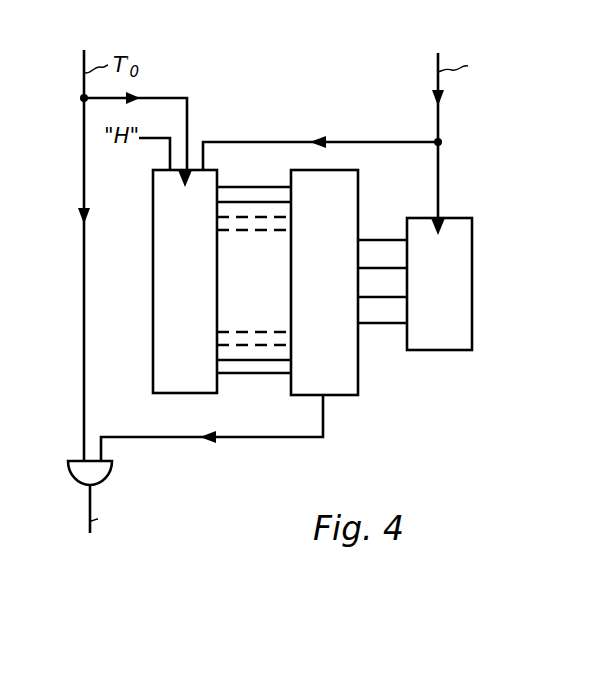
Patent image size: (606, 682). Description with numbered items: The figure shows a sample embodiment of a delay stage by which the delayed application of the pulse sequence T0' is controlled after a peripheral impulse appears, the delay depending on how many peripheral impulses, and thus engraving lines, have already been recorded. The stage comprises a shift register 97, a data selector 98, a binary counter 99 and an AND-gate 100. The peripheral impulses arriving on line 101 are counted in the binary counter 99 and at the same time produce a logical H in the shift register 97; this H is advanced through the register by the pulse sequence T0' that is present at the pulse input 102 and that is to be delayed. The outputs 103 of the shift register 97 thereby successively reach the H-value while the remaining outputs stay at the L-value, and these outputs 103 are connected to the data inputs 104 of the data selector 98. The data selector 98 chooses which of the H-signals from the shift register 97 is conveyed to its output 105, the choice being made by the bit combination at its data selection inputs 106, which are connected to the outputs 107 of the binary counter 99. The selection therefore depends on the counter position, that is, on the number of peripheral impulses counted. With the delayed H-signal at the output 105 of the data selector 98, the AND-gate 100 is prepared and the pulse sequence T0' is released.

The shift register 97 is at (164, 292).
The data selector 98 is at (358, 378).
The binary counter 99 is at (452, 338).
The AND-gate 100 is at (106, 472).
The line 101 is at (438, 76).
The pulse input 102 is at (186, 170).
The outputs 103 is at (222, 206).
The data inputs 104 is at (260, 366).
The output 105 is at (321, 397).
The data selection inputs 106 is at (362, 278).
The outputs 107 is at (402, 282).